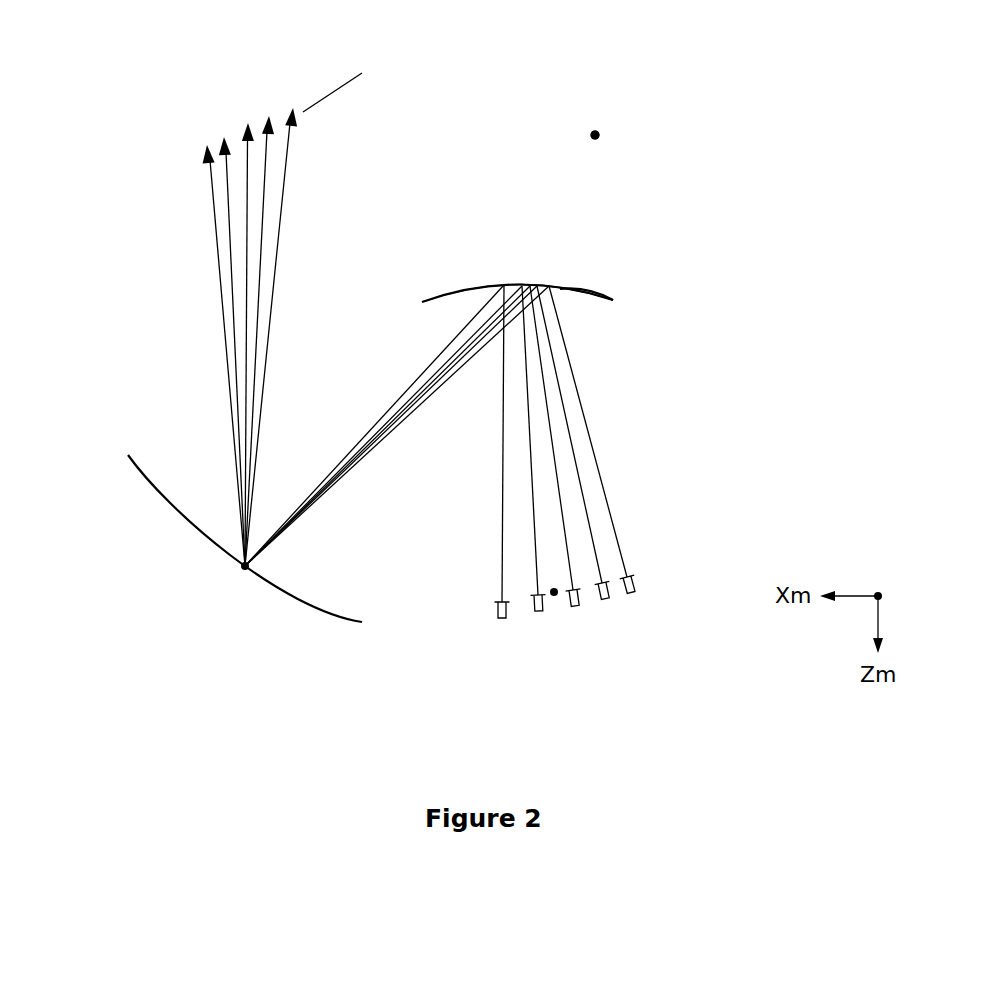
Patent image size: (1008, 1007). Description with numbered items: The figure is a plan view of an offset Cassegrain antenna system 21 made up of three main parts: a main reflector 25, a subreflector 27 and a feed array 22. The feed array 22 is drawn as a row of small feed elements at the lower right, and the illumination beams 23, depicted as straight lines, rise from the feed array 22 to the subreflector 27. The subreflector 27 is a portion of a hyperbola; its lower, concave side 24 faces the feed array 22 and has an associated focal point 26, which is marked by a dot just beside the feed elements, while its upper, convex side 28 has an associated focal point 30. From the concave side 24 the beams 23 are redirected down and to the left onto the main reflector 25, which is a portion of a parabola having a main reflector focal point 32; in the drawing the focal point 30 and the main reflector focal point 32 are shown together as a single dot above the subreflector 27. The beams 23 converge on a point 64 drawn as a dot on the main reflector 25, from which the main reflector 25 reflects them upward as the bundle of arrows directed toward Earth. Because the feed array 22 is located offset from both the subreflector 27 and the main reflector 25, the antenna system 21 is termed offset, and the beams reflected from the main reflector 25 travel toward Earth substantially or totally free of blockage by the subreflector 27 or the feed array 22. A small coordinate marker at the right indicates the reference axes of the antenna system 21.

The antenna system 21 is at (128, 146).
The feed array 22 is at (640, 582).
The illumination beams 23 is at (605, 423).
The concave side 24 is at (590, 305).
The main reflector 25 is at (125, 463).
The focal point 26 is at (556, 597).
The subreflector 27 is at (620, 282).
The convex side 28 is at (583, 283).
The focal point 30 is at (639, 135).
The main reflector focal point 32 is at (595, 135).
The mirror vertex point 64 is at (243, 571).